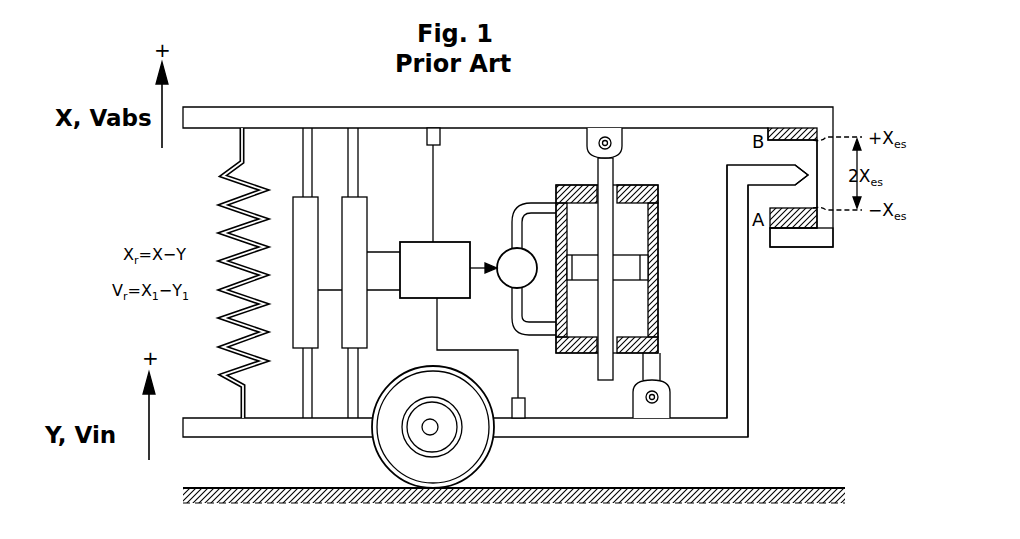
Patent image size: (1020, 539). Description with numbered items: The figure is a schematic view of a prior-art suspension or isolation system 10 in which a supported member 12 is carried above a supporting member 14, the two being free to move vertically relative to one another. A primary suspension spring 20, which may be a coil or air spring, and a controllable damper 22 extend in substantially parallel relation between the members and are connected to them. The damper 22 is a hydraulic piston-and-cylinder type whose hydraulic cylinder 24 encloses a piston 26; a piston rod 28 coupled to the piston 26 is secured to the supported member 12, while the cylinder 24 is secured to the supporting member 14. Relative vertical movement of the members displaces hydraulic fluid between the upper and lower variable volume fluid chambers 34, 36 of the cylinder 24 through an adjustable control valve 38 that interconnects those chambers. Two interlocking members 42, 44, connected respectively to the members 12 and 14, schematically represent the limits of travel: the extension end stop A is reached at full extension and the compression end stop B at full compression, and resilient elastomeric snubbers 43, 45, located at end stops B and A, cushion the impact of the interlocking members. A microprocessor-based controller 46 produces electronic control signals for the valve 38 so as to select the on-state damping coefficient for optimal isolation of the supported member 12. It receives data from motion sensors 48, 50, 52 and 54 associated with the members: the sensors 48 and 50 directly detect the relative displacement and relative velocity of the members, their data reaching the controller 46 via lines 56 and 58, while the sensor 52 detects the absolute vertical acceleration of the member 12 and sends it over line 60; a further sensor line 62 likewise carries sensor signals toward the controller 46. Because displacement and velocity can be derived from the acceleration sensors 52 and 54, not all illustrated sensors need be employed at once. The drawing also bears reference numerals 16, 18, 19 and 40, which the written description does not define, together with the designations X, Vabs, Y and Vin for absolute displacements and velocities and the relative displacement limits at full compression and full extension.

The suspension system 10 is at (280, 52).
The supported member 12 is at (250, 106).
The supporting member 14 is at (240, 440).
The road surface 16 is at (684, 487).
The wheel 18 is at (490, 455).
The wheel axle 19 is at (430, 436).
The primary suspension spring 20 is at (230, 346).
The controllable damper 22 is at (637, 273).
The hydraulic cylinder 24 is at (658, 290).
The piston 26 is at (650, 262).
The piston rod 28 is at (598, 212).
The upper variable volume fluid chamber 34 is at (658, 216).
The lower variable volume fluid chamber 36 is at (658, 330).
The control valve 38 is at (500, 290).
The hydraulic line 40 is at (522, 208).
The interlocking member 42 is at (726, 222).
The snubber 43 is at (790, 128).
The interlocking member 44 is at (810, 186).
The snubber 45 is at (803, 239).
The controller 46 is at (452, 241).
The motion sensor 48 is at (294, 200).
The motion sensor 50 is at (343, 200).
The acceleration sensor 52 is at (426, 139).
The acceleration sensor 54 is at (528, 410).
The line 56 is at (385, 292).
The line 58 is at (383, 250).
The line 60 is at (440, 166).
The sensor line 62 is at (434, 344).